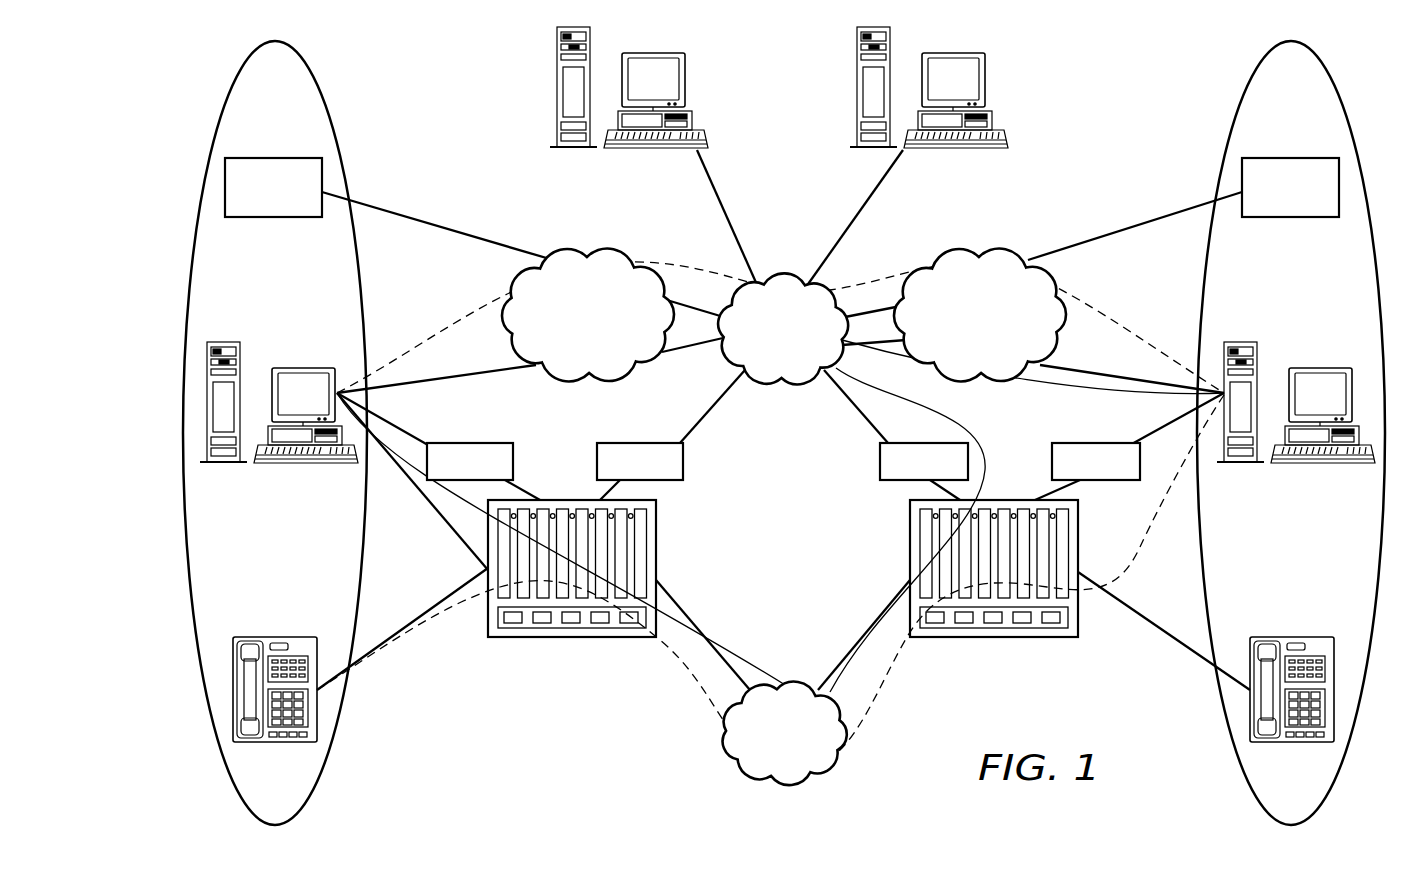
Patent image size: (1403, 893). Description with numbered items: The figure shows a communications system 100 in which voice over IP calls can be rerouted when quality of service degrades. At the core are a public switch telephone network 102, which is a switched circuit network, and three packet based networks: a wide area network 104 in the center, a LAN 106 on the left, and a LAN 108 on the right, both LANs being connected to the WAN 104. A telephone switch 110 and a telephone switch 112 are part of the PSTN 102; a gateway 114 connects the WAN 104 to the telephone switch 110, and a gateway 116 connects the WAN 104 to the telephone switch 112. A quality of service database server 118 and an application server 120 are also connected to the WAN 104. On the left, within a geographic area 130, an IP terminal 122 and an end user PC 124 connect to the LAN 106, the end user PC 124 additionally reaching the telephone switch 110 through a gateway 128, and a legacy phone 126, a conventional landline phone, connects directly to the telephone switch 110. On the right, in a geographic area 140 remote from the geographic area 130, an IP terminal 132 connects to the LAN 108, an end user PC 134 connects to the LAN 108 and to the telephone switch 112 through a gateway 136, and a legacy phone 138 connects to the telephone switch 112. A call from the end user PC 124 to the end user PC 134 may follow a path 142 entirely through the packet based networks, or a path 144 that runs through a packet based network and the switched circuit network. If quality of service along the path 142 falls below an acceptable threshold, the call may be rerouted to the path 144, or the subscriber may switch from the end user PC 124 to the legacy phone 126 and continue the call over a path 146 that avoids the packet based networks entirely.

The communications system 100 is at (497, 736).
The public switch telephone network 102 is at (769, 757).
The wide area network 104 is at (768, 355).
The local area network 106 is at (573, 340).
The LAN 108 is at (965, 340).
The telephone switch 110 is at (657, 520).
The telephone switch 112 is at (910, 520).
The gateway 114 is at (684, 462).
The gateway 116 is at (880, 462).
The quality of service database server 118 is at (689, 88).
The application server 120 is at (989, 88).
The IP terminal 122 is at (278, 158).
The end user PC 124 is at (303, 368).
The legacy phone 126 is at (276, 637).
The gateway 128 is at (514, 462).
The geographic area 130 is at (290, 285).
The IP terminal 132 is at (1291, 158).
The end user PC 134 is at (1323, 368).
The gateway 136 is at (1105, 482).
The legacy phone 138 is at (1291, 637).
The geographic area 140 is at (1305, 285).
The path 142 is at (455, 345).
The path 144 is at (735, 626).
The path 146 is at (401, 633).